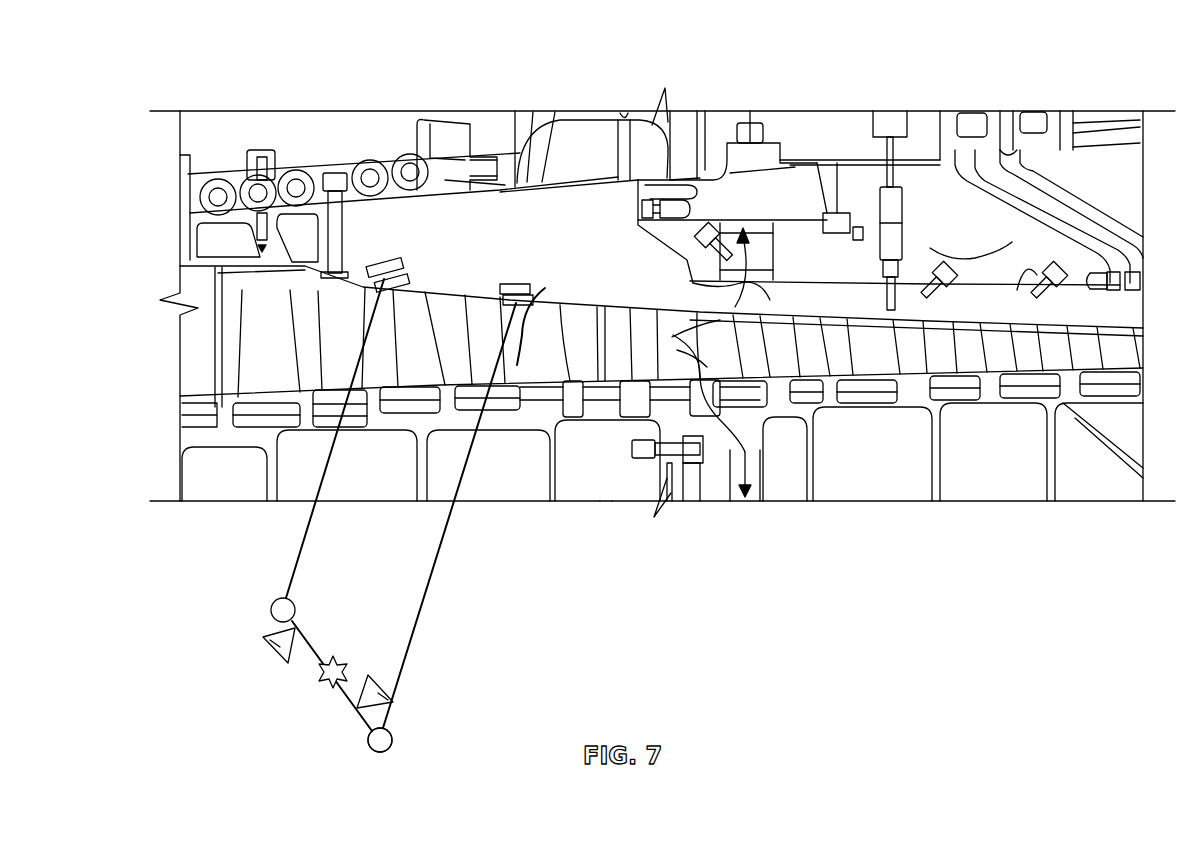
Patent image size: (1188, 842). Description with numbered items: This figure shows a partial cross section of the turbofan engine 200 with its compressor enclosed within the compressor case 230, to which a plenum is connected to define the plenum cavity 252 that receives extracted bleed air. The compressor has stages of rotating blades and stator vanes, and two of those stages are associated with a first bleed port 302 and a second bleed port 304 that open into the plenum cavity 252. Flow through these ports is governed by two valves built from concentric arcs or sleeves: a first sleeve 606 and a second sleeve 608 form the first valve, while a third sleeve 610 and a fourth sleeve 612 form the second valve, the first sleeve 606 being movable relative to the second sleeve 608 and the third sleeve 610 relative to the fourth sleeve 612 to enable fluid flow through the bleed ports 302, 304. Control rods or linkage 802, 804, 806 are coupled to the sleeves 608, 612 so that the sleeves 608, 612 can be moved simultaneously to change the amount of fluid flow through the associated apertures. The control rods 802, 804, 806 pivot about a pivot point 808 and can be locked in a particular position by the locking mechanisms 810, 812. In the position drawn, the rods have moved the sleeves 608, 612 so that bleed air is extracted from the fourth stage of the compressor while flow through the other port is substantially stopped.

The turbofan engine 200 is at (164, 45).
The plenum cavity 252 is at (363, 233).
The first bleed port 302 is at (387, 357).
The second bleed port 304 is at (556, 445).
The compressor case 230 is at (600, 482).
The first sleeve 606 is at (403, 285).
The second sleeve 608 is at (390, 262).
The third sleeve 610 is at (535, 300).
The fourth sleeve 612 is at (522, 284).
The control rod 802 is at (424, 607).
The control rod 804 is at (362, 717).
The control rod 806 is at (295, 563).
The pivot point 808 is at (332, 685).
The locking mechanism 810 is at (275, 647).
The locking mechanism 812 is at (390, 713).